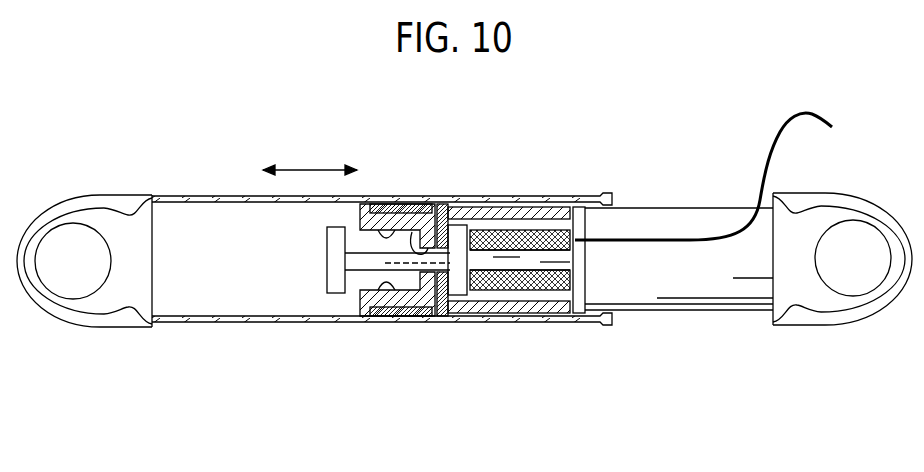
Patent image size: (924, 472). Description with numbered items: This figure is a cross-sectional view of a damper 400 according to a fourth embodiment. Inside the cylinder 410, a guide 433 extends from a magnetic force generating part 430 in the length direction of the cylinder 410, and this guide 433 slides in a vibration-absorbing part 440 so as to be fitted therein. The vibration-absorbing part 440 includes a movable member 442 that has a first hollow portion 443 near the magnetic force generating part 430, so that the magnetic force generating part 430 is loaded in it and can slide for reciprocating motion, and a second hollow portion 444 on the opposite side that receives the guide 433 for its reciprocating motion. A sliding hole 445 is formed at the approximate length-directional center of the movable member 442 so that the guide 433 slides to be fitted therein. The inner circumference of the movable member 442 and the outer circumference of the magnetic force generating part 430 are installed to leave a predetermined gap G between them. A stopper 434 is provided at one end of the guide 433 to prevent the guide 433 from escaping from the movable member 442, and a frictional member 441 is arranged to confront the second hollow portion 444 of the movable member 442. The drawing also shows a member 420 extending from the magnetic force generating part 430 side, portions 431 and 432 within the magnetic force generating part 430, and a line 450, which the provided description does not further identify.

The damper 400 is at (762, 84).
The cylinder 410 is at (227, 198).
The piston rod 420 is at (691, 218).
The magnetic force generating part 430 is at (568, 395).
The magnet 431 is at (533, 290).
The core 432 is at (495, 262).
The guide 433 is at (358, 270).
The stopper 434 is at (325, 258).
The vibration-absorbing part 440 is at (465, 395).
The frictional member 441 is at (392, 316).
The movable member 442 is at (440, 316).
The first hollow portion 443 is at (502, 218).
The second hollow portion 444 is at (383, 204).
The sliding hole 445 is at (427, 204).
The lead wire 450 is at (777, 157).
The gap G is at (540, 246).